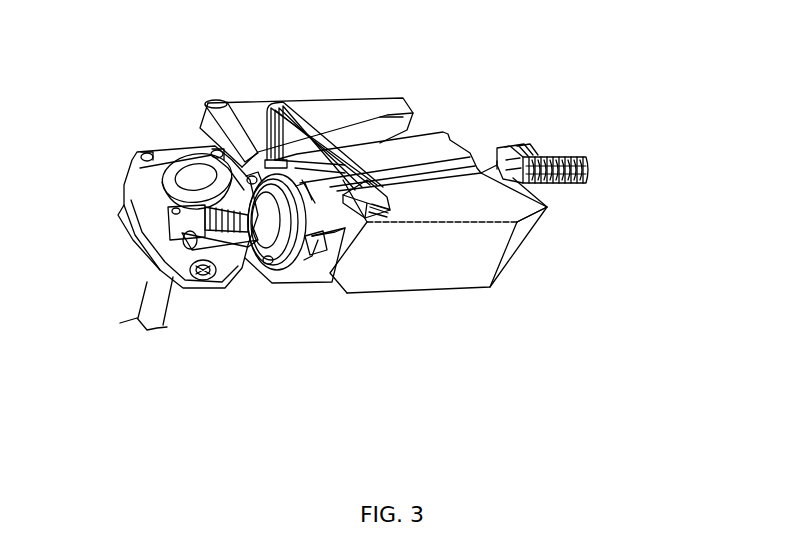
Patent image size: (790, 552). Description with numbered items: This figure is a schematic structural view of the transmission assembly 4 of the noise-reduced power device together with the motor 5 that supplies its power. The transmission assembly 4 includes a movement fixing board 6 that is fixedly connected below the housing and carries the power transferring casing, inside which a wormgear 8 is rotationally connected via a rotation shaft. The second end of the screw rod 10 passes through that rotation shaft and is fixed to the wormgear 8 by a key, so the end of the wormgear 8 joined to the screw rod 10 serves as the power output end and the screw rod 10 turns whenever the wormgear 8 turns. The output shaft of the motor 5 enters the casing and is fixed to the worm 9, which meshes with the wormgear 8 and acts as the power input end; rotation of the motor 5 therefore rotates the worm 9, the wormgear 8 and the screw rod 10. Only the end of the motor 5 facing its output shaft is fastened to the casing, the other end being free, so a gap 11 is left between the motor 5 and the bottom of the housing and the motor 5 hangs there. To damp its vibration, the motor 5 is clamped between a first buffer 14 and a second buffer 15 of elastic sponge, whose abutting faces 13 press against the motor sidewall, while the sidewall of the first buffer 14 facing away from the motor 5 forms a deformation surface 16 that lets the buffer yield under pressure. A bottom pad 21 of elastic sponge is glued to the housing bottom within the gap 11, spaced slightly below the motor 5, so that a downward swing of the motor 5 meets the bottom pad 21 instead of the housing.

The transmission assembly 4 is at (118, 183).
The motor 5 is at (423, 147).
The movement fixing board 6 is at (130, 237).
The wormgear 8 is at (148, 155).
The worm 9 is at (227, 287).
The screw rod 10 is at (155, 307).
The gap 11 is at (303, 280).
The abutting face 13 is at (382, 133).
The first buffer 14 is at (418, 273).
The second buffer 15 is at (323, 110).
The deformation surface 16 is at (523, 237).
The bottom pad 21 is at (310, 280).